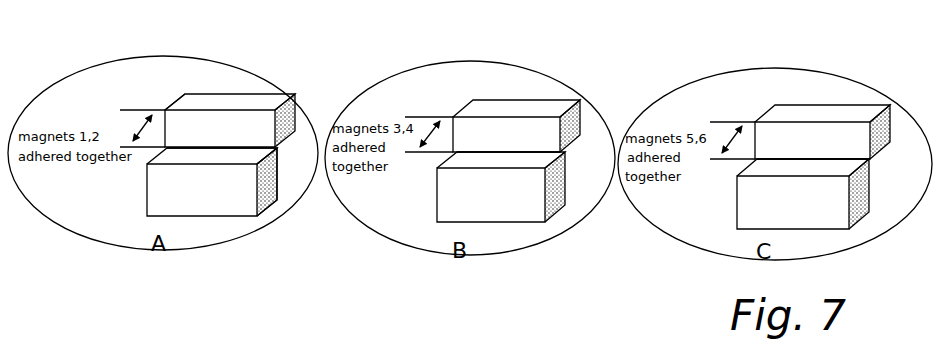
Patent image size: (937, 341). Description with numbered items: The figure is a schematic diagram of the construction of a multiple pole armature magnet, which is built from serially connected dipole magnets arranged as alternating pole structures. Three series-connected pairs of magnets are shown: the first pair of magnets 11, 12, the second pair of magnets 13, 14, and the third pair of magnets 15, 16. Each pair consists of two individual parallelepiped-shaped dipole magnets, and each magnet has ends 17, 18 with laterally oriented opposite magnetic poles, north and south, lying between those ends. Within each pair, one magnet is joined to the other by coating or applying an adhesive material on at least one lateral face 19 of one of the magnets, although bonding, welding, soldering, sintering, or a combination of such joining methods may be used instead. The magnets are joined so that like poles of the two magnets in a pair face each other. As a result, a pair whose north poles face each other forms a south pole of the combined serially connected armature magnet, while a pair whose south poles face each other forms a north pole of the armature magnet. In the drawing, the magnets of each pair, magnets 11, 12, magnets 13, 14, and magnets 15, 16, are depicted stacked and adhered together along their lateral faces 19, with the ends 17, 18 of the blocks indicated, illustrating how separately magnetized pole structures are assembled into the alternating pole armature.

The magnet 11 is at (153, 193).
The magnet 12 is at (268, 103).
The magnet 13 is at (452, 192).
The magnet 14 is at (548, 107).
The magnet 15 is at (748, 210).
The magnet 16 is at (830, 112).
The end 17 is at (183, 98).
The end 18 is at (265, 190).
The lateral face 19 is at (250, 116).